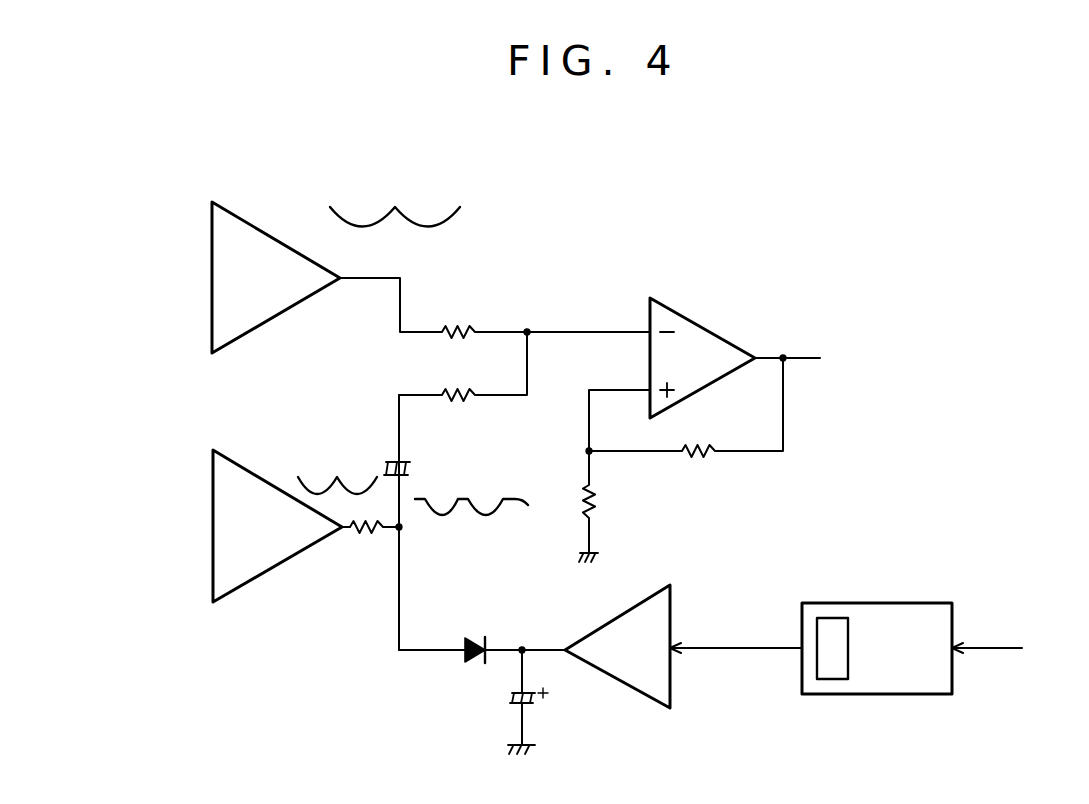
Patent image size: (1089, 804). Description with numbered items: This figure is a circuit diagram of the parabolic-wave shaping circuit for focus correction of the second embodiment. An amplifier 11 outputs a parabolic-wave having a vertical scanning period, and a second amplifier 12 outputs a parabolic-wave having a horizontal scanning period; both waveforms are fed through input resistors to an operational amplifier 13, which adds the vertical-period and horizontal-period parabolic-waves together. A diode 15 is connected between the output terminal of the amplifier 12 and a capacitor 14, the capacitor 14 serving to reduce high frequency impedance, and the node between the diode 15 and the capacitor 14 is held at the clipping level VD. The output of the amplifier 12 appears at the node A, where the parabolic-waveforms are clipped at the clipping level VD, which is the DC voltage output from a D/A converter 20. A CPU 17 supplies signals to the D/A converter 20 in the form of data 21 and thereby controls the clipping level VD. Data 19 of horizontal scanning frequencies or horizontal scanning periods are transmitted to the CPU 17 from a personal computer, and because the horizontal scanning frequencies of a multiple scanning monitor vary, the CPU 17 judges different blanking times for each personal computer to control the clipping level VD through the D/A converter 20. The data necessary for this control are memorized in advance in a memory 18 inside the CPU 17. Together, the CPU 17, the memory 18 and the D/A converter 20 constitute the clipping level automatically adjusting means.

The amplifier 11 is at (212, 262).
The amplifier 12 is at (212, 505).
The operational amplifier 13 is at (712, 350).
The capacitor 14 is at (552, 698).
The diode 15 is at (473, 640).
The CPU 17 is at (913, 602).
The memory 18 is at (833, 680).
The data of horizontal scanning frequencies or horizontal scanning periods 19 is at (1015, 650).
The D/A converter 20 is at (672, 627).
The data to be transmitted to the D/A converter 21 is at (745, 650).
The node A is at (395, 653).
The clipping level VD is at (513, 655).